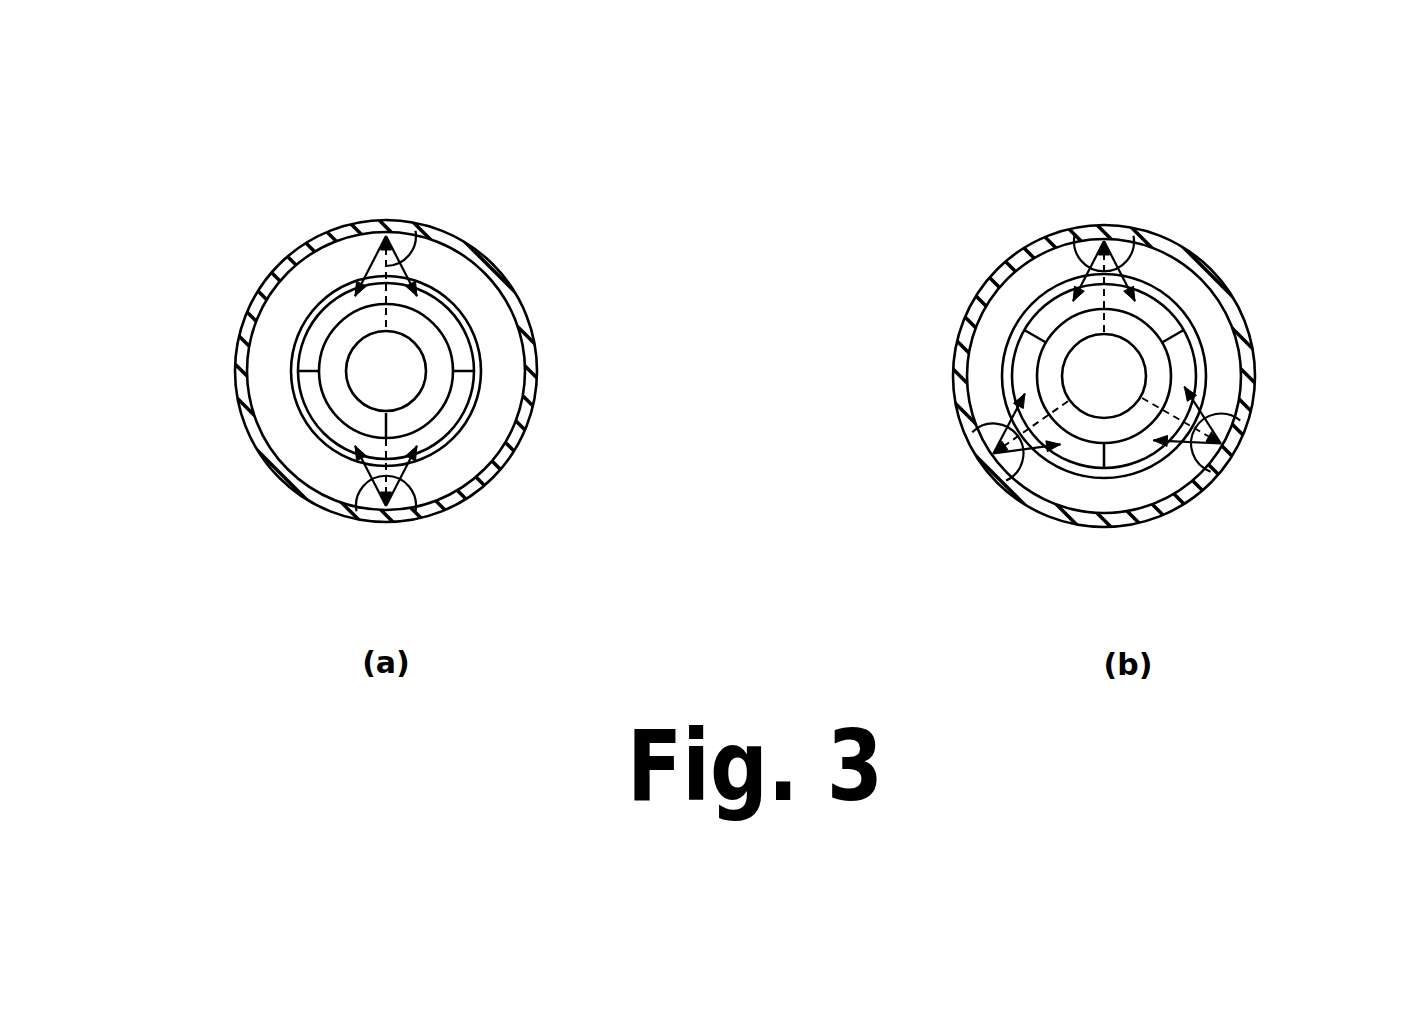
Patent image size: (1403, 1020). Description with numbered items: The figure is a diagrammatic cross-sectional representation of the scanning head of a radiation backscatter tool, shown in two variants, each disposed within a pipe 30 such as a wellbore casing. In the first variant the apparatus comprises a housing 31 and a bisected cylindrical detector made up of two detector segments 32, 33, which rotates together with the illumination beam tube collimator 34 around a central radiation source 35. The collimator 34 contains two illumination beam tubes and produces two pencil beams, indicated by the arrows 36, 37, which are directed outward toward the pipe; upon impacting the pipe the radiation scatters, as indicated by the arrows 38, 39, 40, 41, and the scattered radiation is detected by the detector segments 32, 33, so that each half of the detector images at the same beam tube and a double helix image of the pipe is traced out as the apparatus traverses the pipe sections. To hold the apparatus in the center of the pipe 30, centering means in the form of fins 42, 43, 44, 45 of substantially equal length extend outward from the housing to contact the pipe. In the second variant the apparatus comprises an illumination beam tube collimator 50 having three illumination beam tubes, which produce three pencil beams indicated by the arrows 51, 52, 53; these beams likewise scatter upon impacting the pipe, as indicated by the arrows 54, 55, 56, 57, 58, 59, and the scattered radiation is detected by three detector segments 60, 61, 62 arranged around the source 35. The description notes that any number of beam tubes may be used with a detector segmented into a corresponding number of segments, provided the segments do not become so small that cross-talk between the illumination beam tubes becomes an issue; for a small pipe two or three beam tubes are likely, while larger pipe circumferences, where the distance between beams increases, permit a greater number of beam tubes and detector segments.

The pipe 30 is at (516, 447).
The housing 31 is at (470, 305).
The detector segment 32 is at (312, 360).
The detector segment 33 is at (307, 393).
The illumination beam tube collimator 34 is at (448, 352).
The radiation source 35 is at (430, 378).
The pencil beam 36 is at (385, 288).
The pencil beam 37 is at (412, 470).
The scattered radiation 38 is at (410, 236).
The scattered radiation 39 is at (361, 282).
The scattered radiation 40 is at (398, 500).
The scattered radiation 41 is at (373, 480).
The fin 42 is at (307, 310).
The fin 43 is at (470, 298).
The fin 44 is at (477, 447).
The fin 45 is at (297, 457).
The illumination beam tube collimator 50 is at (1140, 305).
The pencil beam 51 is at (1090, 285).
The pencil beam 52 is at (1187, 390).
The pencil beam 53 is at (1023, 400).
The scattered radiation 54 is at (1075, 300).
The scattered radiation 55 is at (1126, 245).
The scattered radiation 56 is at (1160, 435).
The scattered radiation 57 is at (1215, 450).
The scattered radiation 58 is at (1013, 477).
The scattered radiation 59 is at (983, 448).
The detector segment 60 is at (1080, 450).
The detector segment 61 is at (1025, 295).
The detector segment 62 is at (1180, 353).